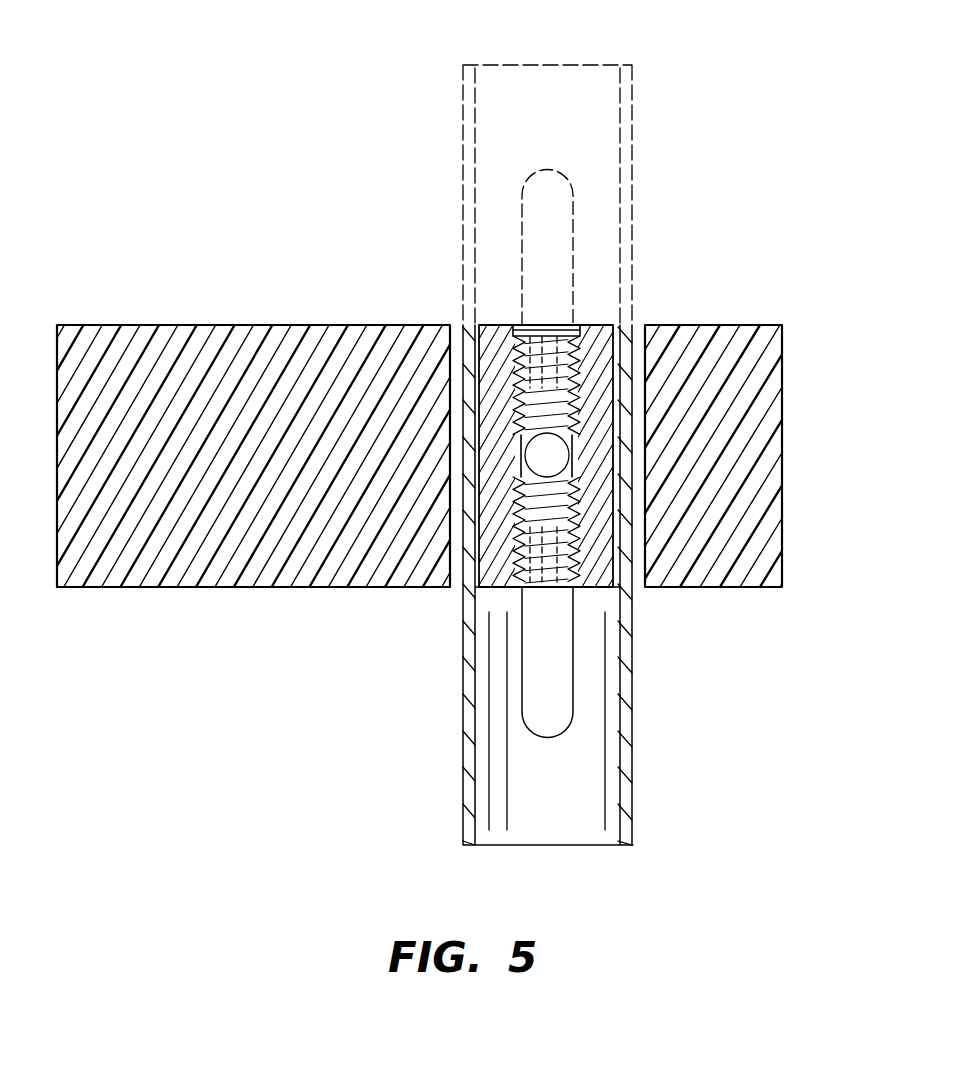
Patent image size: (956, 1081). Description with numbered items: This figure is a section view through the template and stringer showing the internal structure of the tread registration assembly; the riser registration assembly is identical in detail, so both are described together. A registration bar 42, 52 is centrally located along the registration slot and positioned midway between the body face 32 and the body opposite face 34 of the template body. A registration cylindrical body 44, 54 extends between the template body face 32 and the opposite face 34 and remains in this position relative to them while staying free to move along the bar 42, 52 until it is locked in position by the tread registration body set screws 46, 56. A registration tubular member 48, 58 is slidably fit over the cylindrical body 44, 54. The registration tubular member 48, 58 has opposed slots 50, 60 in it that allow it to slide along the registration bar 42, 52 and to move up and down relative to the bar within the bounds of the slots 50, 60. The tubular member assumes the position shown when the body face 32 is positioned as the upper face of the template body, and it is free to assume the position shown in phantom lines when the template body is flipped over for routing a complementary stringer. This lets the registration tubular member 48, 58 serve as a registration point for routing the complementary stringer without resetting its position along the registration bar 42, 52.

The body face 32 is at (213, 325).
The body opposite face 34 is at (252, 587).
The registration bar 42 is at (442, 376).
The registration bar 52 is at (555, 455).
The registration cylindrical body 44 is at (554, 478).
The registration cylindrical body 54 is at (603, 530).
The tread registration body set screws 46 is at (543, 448).
The registration body set screws 56 is at (572, 400).
The registration tubular member 48 is at (631, 440).
The registration tubular member 58 is at (632, 129).
The opposed slots 50 is at (658, 454).
The opposed slots 60 is at (573, 695).